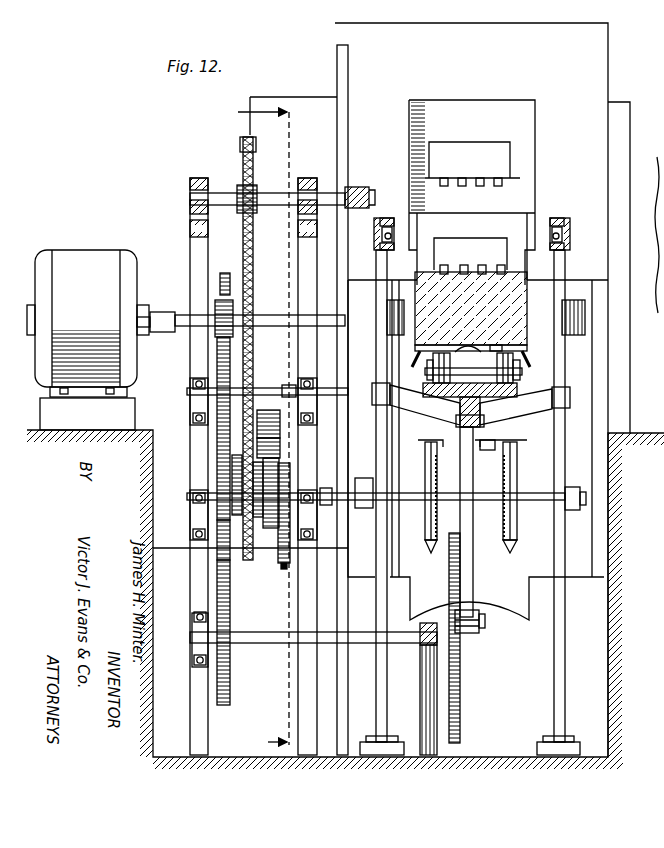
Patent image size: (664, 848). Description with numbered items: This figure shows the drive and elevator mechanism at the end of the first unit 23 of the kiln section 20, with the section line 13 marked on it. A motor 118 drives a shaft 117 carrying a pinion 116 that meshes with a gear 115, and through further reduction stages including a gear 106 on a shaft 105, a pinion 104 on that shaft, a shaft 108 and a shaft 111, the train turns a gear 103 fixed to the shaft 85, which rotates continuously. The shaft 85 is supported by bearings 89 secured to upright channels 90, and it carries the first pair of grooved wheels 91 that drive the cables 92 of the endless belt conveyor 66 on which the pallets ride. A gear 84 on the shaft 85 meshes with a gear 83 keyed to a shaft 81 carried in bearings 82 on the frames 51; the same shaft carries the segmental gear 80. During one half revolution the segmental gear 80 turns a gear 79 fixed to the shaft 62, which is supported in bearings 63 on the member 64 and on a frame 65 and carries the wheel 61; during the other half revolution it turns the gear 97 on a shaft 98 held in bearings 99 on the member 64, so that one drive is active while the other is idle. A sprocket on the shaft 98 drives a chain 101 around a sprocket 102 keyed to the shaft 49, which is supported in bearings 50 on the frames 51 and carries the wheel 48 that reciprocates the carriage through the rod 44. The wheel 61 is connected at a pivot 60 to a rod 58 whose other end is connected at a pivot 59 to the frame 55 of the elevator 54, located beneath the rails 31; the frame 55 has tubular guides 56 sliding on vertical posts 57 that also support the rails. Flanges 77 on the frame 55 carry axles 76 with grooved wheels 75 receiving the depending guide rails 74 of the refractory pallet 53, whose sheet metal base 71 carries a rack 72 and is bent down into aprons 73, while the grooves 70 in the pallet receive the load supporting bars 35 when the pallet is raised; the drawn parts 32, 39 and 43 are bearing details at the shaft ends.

The section line 13— 13 is at (249, 428).
The kiln section 20 is at (611, 31).
The first unit 23 is at (595, 71).
The rails 31 is at (373, 242).
The bearing cap 32 is at (386, 218).
The load supporting bars 35 is at (471, 308).
The bearing race 39 is at (394, 239).
The bearing housing 43 is at (377, 218).
The rod 44 is at (358, 187).
The wheel 48 is at (349, 62).
The shaft 49 is at (271, 192).
The bearings 50 is at (198, 178).
The frames 51 is at (190, 226).
The refractory pallet 53 is at (536, 184).
The elevator 54 is at (520, 388).
The frame 55 is at (492, 458).
The tubular guides 56 is at (380, 383).
The vertical posts 57 is at (376, 266).
The rod 58 is at (474, 572).
The pivot connection 59 is at (462, 420).
The pivot connection 60 is at (476, 614).
The wheel 61 is at (461, 690).
The shaft 62 is at (344, 632).
The bearings 63 is at (192, 634).
The member 64 is at (190, 682).
The frame 65 is at (420, 700).
The endless belt conveyor 66 is at (438, 482).
The grooves 70 is at (497, 178).
The sheet metal base 71 is at (498, 345).
The rack 72 is at (468, 345).
The aprons 73 is at (412, 360).
The guide rails 74 is at (428, 344).
The grooved wheels 75 is at (427, 370).
The axles 76 is at (473, 377).
The flanges 77 is at (520, 371).
The gear 79 is at (231, 612).
The segmental gear 80 is at (231, 564).
The shaft 81 is at (270, 525).
The bearings 82 is at (190, 516).
The gear 83 is at (284, 569).
The gear 84 is at (326, 488).
The shaft 85 is at (345, 501).
The bearings 89 is at (364, 509).
The upright channels 90 is at (373, 577).
The grooved wheels 91 is at (437, 530).
The cables 92 is at (431, 551).
The gear 97 is at (217, 448).
The shaft 98 is at (290, 387).
The bearings 99 is at (190, 394).
The chain 101 is at (257, 213).
The sprocket 102 is at (255, 150).
The gear 103 is at (292, 470).
The pinion 104 is at (280, 446).
The shaft 105 is at (231, 468).
The gear 106 is at (253, 478).
The shaft 108 is at (280, 432).
The shaft 111 is at (268, 387).
The gear 115 is at (218, 283).
The pinion 116 is at (214, 310).
The shaft 117 is at (268, 316).
The motor 118 is at (78, 258).